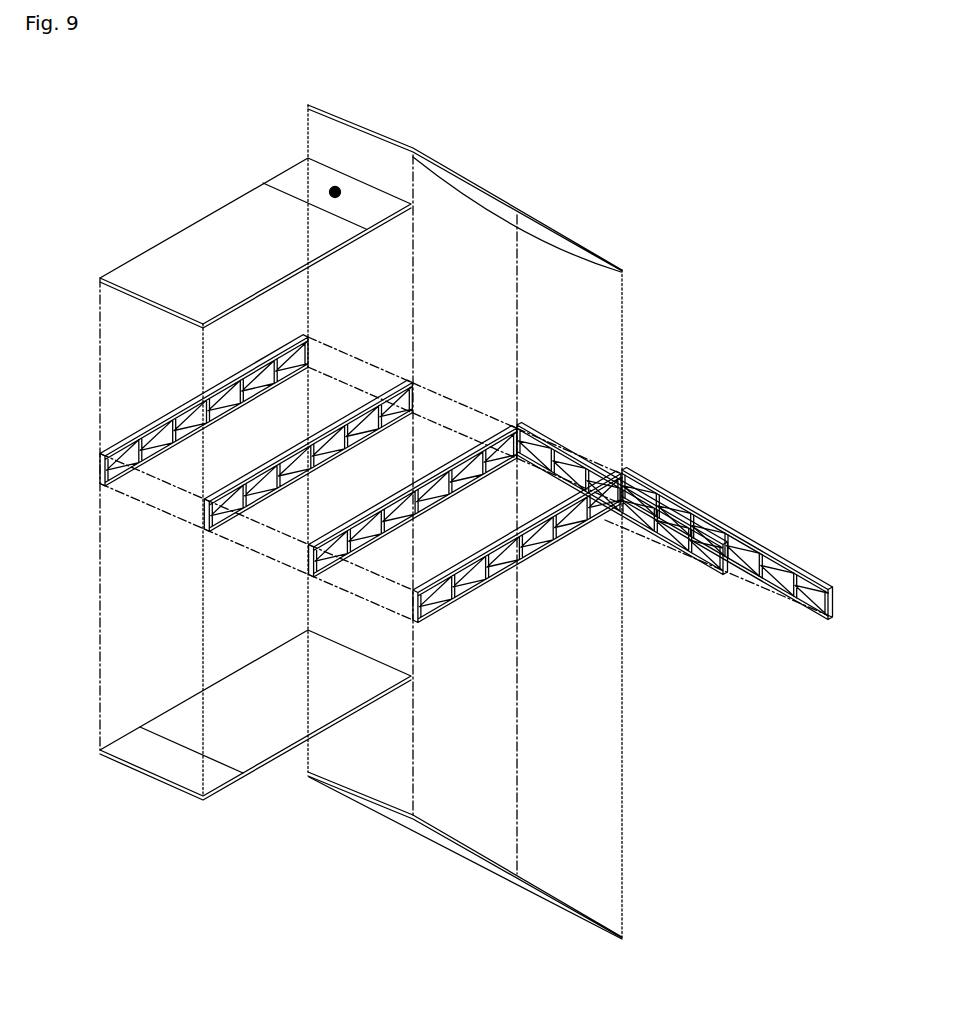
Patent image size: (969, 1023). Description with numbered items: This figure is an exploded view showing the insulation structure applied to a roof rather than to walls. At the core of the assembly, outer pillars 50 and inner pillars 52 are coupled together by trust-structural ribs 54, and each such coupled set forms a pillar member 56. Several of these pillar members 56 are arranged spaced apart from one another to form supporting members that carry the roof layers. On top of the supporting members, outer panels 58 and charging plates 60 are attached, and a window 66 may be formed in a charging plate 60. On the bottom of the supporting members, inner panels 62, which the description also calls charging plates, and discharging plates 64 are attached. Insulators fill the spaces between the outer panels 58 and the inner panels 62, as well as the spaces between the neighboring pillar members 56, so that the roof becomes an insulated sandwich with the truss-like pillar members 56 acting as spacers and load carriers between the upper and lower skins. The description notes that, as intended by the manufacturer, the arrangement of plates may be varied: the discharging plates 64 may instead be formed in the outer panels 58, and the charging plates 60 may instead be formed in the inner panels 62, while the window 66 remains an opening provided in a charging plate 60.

The outer pillar 50 is at (700, 507).
The inner pillar 52 is at (807, 593).
The trust-structural rib 54 is at (748, 553).
The pillar member 56 is at (475, 479).
The outer panel 58 is at (221, 220).
The charging plate 60 is at (345, 119).
The inner panel 62 is at (270, 686).
The discharging plate 64 is at (147, 770).
The window 66 is at (341, 190).